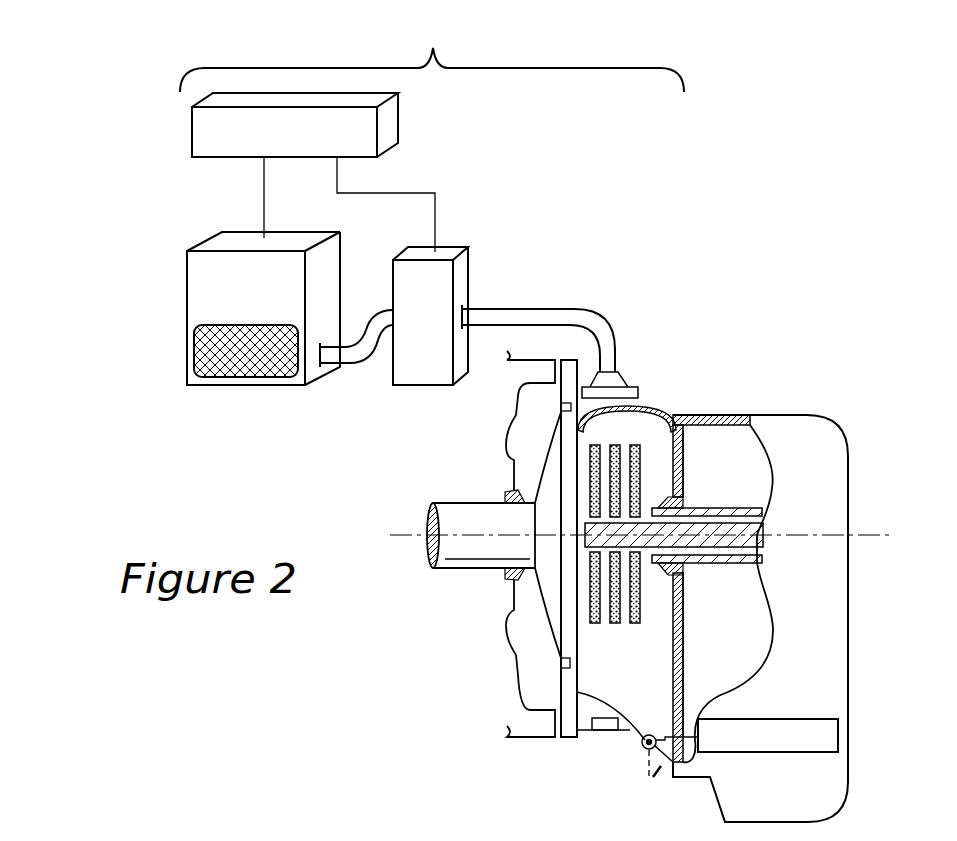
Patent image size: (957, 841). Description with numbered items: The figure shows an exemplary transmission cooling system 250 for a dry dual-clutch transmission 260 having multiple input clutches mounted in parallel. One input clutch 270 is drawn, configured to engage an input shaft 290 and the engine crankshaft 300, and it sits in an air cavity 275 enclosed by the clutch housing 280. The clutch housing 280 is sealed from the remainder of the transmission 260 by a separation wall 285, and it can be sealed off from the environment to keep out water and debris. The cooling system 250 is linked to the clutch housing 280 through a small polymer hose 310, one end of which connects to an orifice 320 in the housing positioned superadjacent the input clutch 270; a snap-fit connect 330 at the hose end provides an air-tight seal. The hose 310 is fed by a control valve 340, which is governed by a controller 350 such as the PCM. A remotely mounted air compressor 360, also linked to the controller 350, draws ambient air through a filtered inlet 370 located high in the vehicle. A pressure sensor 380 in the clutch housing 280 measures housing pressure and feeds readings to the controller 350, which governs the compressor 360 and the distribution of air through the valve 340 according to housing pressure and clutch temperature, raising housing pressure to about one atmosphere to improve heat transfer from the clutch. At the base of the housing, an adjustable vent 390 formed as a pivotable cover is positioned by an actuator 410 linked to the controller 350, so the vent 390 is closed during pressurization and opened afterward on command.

The transmission cooling system 250 is at (432, 55).
The transmission 260 is at (840, 527).
The input clutch 270 is at (605, 525).
The air cavity 275 is at (652, 652).
The clutch housing 280 is at (680, 420).
The separation wall 285 is at (684, 443).
The input shaft 290 is at (752, 530).
The engine crankshaft 300 is at (468, 500).
The hose 310 is at (530, 309).
The orifice 320 is at (613, 405).
The snap-fit connect 330 is at (618, 383).
The control valve 340 is at (400, 270).
The controller 350 is at (197, 147).
The air compressor 360 is at (270, 301).
The filtered inlet 370 is at (280, 373).
The pressure sensor 380 is at (604, 731).
The adjustable vent 390 is at (669, 776).
The actuator 410 is at (826, 719).